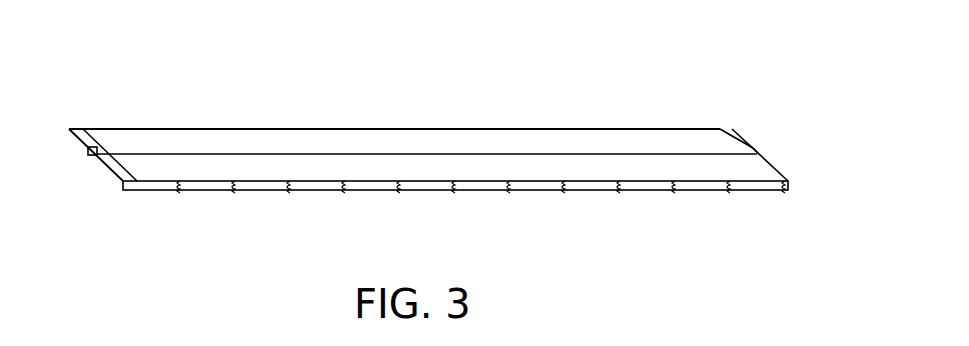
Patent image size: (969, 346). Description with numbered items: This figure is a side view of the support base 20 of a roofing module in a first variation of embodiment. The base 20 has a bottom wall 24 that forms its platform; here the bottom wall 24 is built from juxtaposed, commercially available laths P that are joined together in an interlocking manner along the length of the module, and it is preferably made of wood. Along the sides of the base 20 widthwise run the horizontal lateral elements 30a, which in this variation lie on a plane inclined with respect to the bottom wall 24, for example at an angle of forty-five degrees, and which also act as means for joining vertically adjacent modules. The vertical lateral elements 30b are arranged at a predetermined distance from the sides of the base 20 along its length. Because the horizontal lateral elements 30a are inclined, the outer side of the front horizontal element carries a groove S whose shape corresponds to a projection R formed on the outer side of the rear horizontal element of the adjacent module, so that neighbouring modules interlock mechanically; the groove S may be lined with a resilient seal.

The support base 20 is at (468, 105).
The horizontal lateral elements 30a is at (78, 129).
The vertical lateral elements 30b is at (292, 134).
The bottom wall 24 is at (162, 190).
The projection R is at (85, 154).
The groove S is at (764, 147).
The laths P is at (703, 190).